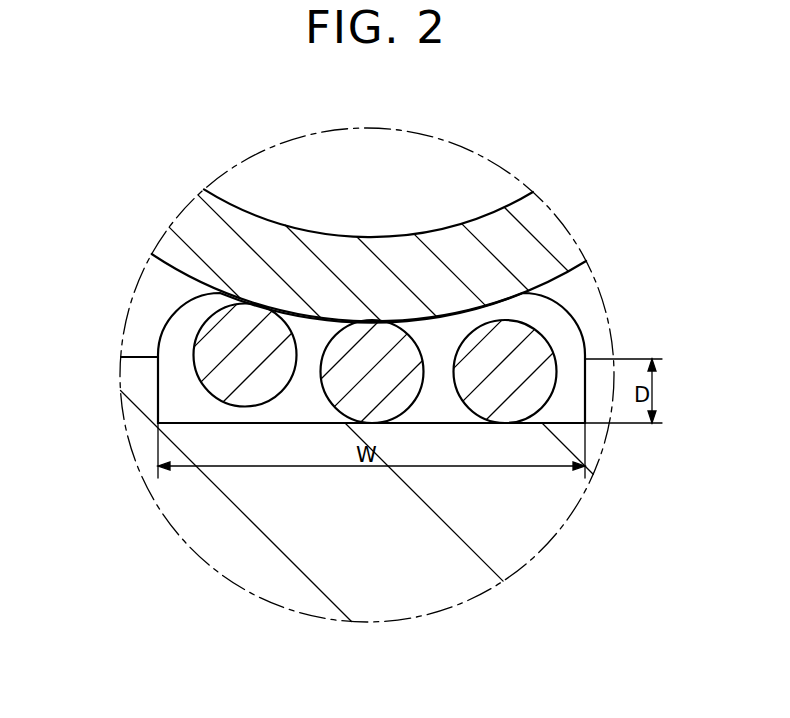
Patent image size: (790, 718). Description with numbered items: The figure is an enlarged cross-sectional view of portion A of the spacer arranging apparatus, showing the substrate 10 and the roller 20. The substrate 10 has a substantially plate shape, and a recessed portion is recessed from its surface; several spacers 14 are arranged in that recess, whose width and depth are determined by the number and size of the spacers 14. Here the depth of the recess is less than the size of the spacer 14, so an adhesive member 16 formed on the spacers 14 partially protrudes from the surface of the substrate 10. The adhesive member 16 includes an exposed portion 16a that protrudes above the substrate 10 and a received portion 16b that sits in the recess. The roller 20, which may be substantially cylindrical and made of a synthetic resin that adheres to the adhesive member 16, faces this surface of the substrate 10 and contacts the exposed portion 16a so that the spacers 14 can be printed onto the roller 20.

The substrate 10 is at (542, 527).
The spacer 14 is at (502, 338).
The adhesive member 16 is at (363, 358).
The exposed portion 16a is at (187, 317).
The received portion 16b is at (182, 396).
The roller 20 is at (197, 214).
The portion A is at (562, 222).